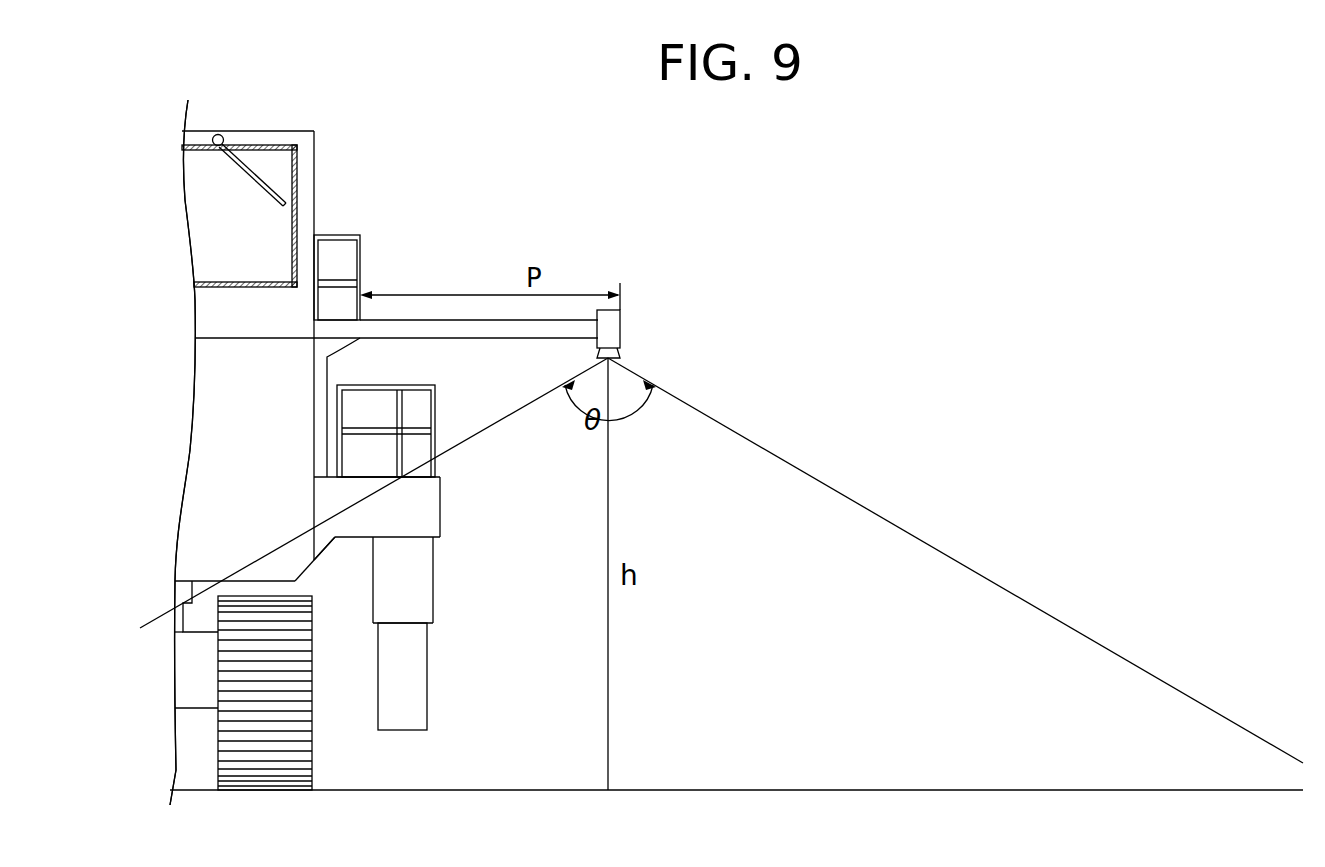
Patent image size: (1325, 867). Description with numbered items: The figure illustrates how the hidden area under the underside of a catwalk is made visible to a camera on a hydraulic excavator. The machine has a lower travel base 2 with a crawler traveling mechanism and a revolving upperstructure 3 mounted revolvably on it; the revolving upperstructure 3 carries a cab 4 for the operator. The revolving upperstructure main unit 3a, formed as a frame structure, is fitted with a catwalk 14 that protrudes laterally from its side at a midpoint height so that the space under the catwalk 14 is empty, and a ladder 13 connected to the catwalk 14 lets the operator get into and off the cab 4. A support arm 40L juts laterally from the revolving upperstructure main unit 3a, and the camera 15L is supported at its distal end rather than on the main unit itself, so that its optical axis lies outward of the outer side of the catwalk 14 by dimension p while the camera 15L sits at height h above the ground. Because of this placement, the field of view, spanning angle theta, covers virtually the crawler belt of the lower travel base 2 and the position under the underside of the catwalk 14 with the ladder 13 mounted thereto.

The lower travel base 2 is at (312, 622).
The revolving upperstructure 3 is at (345, 108).
The revolving upperstructure main unit 3a is at (205, 457).
The cab 4 is at (203, 208).
The ladder 13 is at (423, 683).
The catwalk 14 is at (410, 473).
The camera 15L is at (615, 328).
The support arm 40L is at (434, 330).